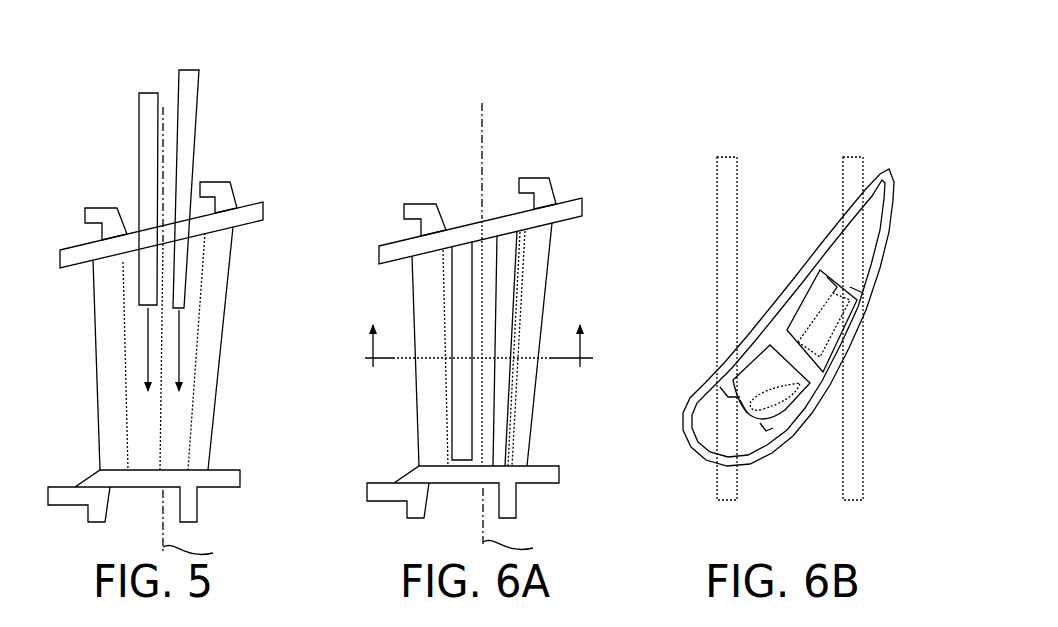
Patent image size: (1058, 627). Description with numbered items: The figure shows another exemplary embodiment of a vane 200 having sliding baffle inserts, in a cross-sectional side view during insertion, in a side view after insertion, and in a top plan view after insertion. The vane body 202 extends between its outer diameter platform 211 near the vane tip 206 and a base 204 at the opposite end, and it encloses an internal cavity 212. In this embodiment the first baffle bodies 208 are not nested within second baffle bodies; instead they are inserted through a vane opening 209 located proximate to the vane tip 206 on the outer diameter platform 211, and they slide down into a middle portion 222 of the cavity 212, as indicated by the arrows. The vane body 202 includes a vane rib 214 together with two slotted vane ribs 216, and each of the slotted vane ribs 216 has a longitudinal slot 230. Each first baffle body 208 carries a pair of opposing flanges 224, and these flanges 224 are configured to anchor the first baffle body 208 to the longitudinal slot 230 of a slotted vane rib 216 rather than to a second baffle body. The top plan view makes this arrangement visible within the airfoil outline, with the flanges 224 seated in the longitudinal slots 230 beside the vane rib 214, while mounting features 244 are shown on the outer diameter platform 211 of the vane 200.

In FIG. 5, the seal assembly 200 is at (304, 149).
In FIG. 6A, the seal assembly 200 is at (624, 146).
In FIG. 6B, the seal assembly 200 is at (877, 125).
In FIG. 5, the vane body 202 is at (97, 360).
In FIG. 6A, the vane body 202 is at (553, 260).
In FIG. 6B, the vane body 202 is at (788, 317).
In FIG. 5, the base flange 204 is at (100, 472).
In FIG. 5, the vane tip 206 is at (93, 267).
In FIG. 5, the first baffle bodies 208 is at (200, 100).
In FIG. 6A, the first baffle bodies 208 is at (452, 423).
In FIG. 6B, the first baffle bodies 208 is at (828, 328).
In FIG. 5, the vane opening 209 is at (140, 235).
In FIG. 5, the outer diameter platform 211 is at (100, 243).
In FIG. 5, the cavity 212 is at (113, 385).
In FIG. 6A, the vane rib 214 is at (483, 253).
In FIG. 6B, the vane rib 214 is at (817, 375).
In FIG. 6B, the slotted vane ribs 216 is at (833, 270).
In FIG. 5, the middle portion 222 is at (168, 432).
In FIG. 6B, the flanges 224 is at (802, 342).
In FIG. 6B, the longitudinal slot 230 is at (855, 290).
In FIG. 5, the hook 244 is at (213, 183).
In FIG. 6A, the hook 244 is at (530, 178).
In FIG. 6B, the hook 244 is at (857, 157).